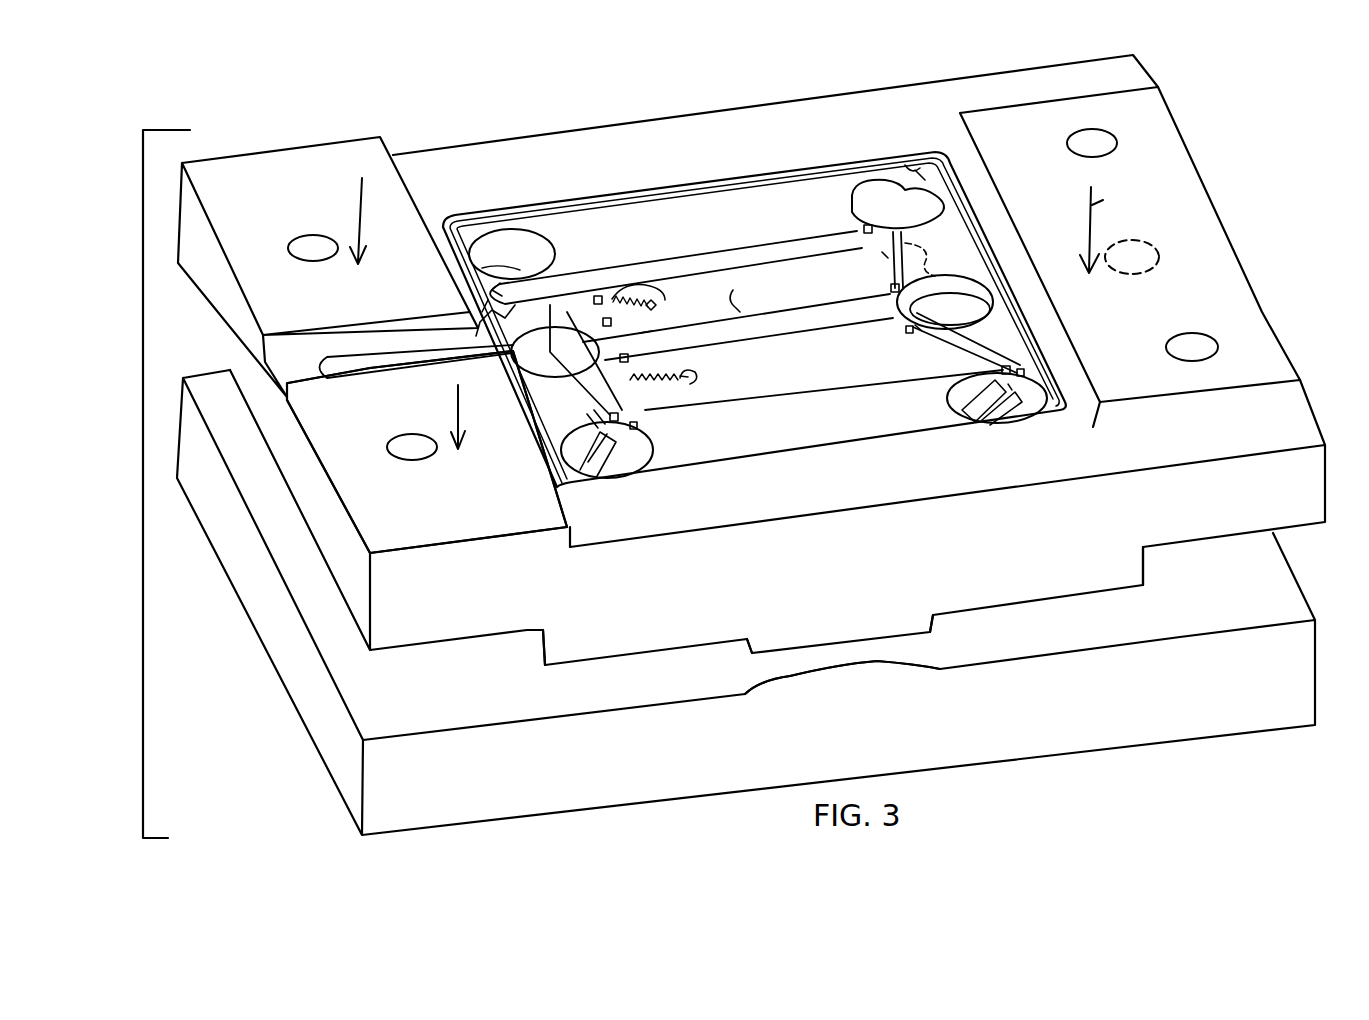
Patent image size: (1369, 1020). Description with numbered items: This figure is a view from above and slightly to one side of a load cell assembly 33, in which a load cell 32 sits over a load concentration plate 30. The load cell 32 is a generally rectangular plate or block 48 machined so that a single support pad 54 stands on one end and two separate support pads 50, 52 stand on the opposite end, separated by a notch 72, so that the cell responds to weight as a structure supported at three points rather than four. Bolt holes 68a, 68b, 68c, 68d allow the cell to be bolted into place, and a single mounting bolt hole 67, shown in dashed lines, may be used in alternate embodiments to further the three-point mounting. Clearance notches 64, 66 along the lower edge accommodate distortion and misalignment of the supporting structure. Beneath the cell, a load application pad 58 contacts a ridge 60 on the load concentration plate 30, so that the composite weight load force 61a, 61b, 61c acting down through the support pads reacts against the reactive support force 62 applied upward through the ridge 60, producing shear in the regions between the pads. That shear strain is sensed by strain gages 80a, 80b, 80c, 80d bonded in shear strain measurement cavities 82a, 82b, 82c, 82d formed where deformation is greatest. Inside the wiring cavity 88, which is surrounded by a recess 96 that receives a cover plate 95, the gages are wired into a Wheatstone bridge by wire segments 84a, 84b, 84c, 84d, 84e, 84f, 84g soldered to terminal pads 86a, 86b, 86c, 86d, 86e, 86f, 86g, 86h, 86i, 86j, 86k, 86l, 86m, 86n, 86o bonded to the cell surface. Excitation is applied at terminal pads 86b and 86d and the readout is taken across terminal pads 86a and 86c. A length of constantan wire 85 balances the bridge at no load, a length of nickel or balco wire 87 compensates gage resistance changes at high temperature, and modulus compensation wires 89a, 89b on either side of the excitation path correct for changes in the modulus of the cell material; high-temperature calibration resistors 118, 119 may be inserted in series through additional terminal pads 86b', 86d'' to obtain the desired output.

The load concentration plate 30 is at (268, 712).
The load cell 32 is at (493, 76).
The load cell assembly 33 is at (131, 379).
The rectangular plate or block 48 is at (758, 104).
The support pad 50 is at (321, 160).
The support pad 52 is at (453, 505).
The support pad 54 is at (1070, 192).
The load application pad 58 is at (770, 658).
The ridge 60 is at (922, 658).
The reactive support force 62 is at (842, 700).
The clearance notch 64 is at (552, 645).
The clearance notch 66 is at (1140, 568).
The single mounting bolt hole 67 is at (1160, 247).
The bolt hole 68a is at (290, 245).
The bolt hole 68b is at (1105, 130).
The bolt hole 68c is at (390, 446).
The bolt hole 68d is at (1195, 332).
The composite weight load force 61a is at (365, 225).
The composite weight load force 61b is at (462, 420).
The composite weight load force 61c is at (1103, 200).
The notch 72 is at (277, 372).
The strain gage 80a is at (474, 336).
The strain gage 80b is at (915, 248).
The strain gage 80c is at (592, 422).
The strain gage 80d is at (962, 394).
The shear strain measurement cavity 82a is at (555, 252).
The shear strain measurement cavity 82b is at (853, 208).
The shear strain measurement cavity 82c is at (655, 452).
The shear strain measurement cavity 82d is at (950, 410).
The wire segment 84a is at (555, 352).
The wire segment 84b is at (707, 262).
The wire segment 84c is at (893, 284).
The wire segment 84d is at (960, 342).
The wire segment 84e is at (764, 403).
The wire segment 84f is at (578, 384).
The wire segment 84g is at (764, 349).
The constantan wire 85 is at (924, 288).
The nickel or balco wire 87 is at (950, 309).
The terminal pad 86a is at (599, 295).
The terminal pad 86b is at (628, 335).
The additional terminal pad 86b' is at (686, 307).
The terminal pad 86c is at (653, 334).
The terminal pad 86d is at (671, 358).
The additional terminal pad 86d'' is at (734, 362).
The terminal pad 86e is at (505, 249).
The terminal pad 86f is at (521, 273).
The terminal pad 86g is at (641, 406).
The terminal pad 86h is at (640, 428).
The terminal pad 86i is at (862, 236).
The terminal pad 86j is at (880, 258).
The terminal pad 86k is at (890, 298).
The terminal pad 86l is at (905, 330).
The terminal pad 86m is at (918, 330).
The terminal pad 86n is at (1000, 368).
The terminal pad 86o is at (1023, 400).
The wiring cavity 88 is at (738, 290).
The modulus compensation wire 89a is at (666, 290).
The modulus compensation wire 89b is at (696, 383).
The cover plate 95 is at (905, 165).
The recess 96 is at (772, 172).
The high-temperature calibration resistor 118 is at (636, 382).
The high-temperature calibration resistor 119 is at (630, 296).